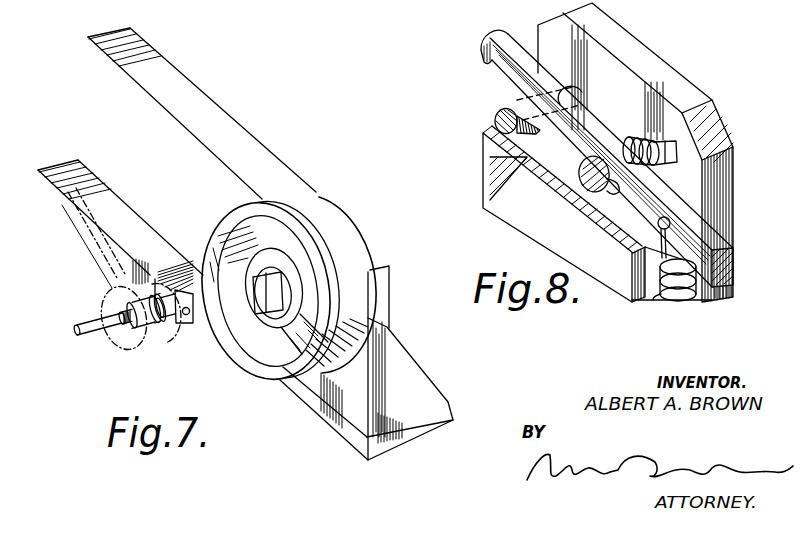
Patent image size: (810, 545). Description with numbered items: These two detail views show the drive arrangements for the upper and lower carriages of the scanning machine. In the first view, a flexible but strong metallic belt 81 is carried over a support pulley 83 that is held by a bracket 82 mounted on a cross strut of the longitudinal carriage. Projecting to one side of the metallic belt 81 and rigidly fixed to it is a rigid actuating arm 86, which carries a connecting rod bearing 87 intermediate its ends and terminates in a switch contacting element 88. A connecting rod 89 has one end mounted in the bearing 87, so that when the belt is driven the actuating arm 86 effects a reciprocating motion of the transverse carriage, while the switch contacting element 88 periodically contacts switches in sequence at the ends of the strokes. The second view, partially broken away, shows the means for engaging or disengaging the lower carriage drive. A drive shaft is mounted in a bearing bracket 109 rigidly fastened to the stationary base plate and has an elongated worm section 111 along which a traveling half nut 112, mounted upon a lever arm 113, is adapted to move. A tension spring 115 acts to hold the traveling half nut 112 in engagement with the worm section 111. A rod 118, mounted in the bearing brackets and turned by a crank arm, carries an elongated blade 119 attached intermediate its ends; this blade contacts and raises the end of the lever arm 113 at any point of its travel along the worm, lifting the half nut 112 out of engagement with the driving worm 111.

In FIG. 7, the metallic belt 81 is at (187, 86).
In FIG. 7, the bracket 82 is at (357, 414).
In FIG. 7, the support pulley 83 is at (216, 224).
In FIG. 7, the actuating arm 86 is at (175, 326).
In FIG. 7, the connecting rod bearing 87 is at (128, 347).
In FIG. 7, the switch contacting element 88 is at (82, 322).
In FIG. 7, the connecting rod 89 is at (88, 245).
In FIG. 8, the bearing bracket 109 is at (647, 58).
In FIG. 8, the worm section 111 is at (636, 137).
In FIG. 8, the traveling half nut 112 is at (613, 190).
In FIG. 8, the lever arm 113 is at (497, 43).
In FIG. 8, the tension spring 115 is at (673, 297).
In FIG. 8, the rod 118 is at (497, 110).
In FIG. 8, the elongated blade 119 is at (527, 136).